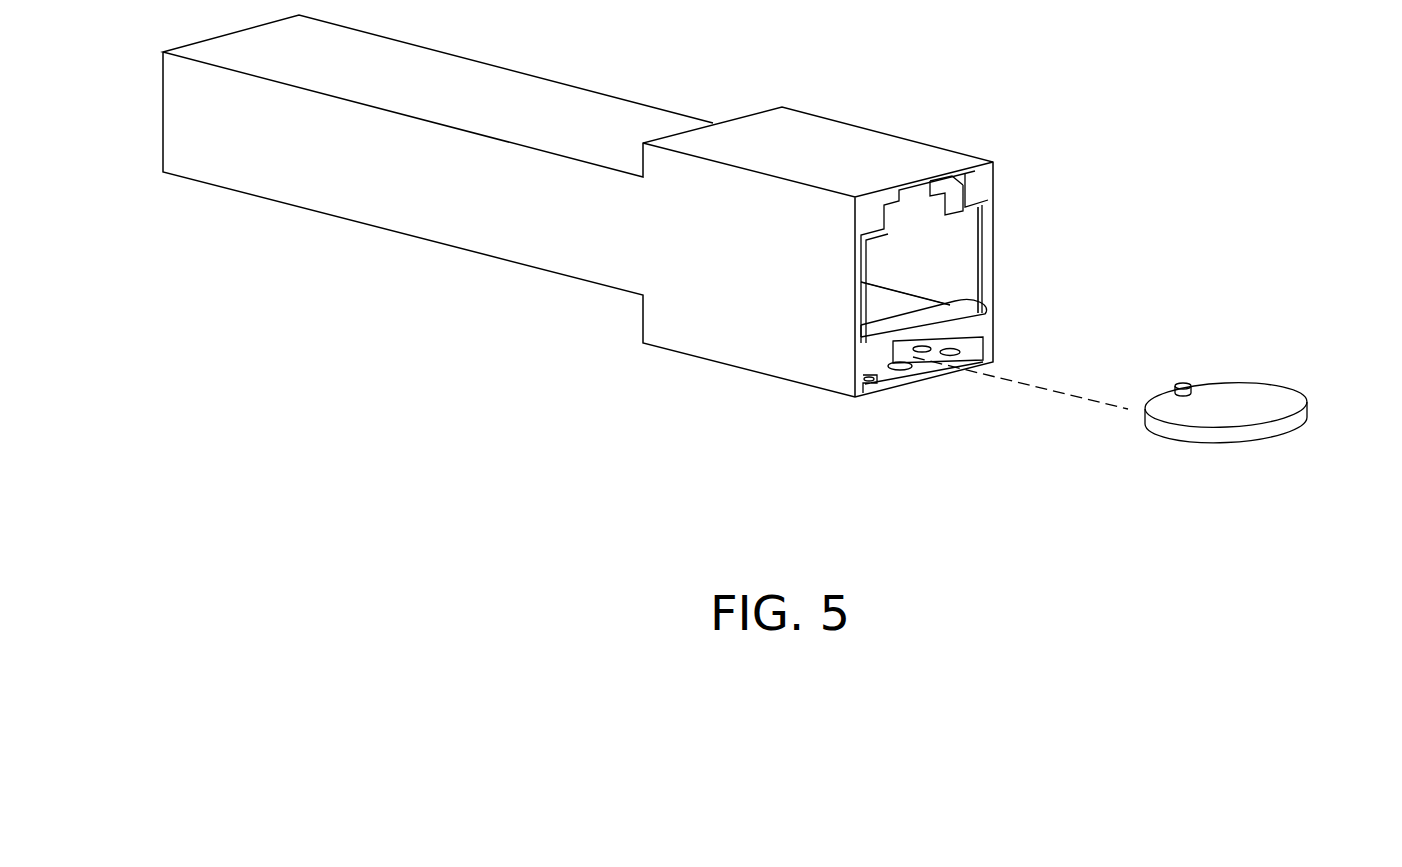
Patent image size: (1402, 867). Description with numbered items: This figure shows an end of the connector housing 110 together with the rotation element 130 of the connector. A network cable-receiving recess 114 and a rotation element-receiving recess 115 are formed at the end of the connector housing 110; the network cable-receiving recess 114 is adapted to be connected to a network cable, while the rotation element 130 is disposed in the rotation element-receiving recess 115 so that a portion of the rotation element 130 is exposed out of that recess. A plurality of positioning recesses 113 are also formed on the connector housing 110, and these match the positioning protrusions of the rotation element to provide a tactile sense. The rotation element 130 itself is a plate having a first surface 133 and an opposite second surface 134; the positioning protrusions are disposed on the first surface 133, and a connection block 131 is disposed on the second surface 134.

The connector housing 110 is at (883, 150).
The positioning recesses 113 is at (980, 350).
The network cable-receiving recess 114 is at (967, 253).
The rotation element-receiving recess 115 is at (958, 342).
The rotation element 130 is at (1227, 395).
The connection block 131 is at (1180, 383).
The first surface 133 is at (1255, 440).
The second surface 134 is at (1295, 408).